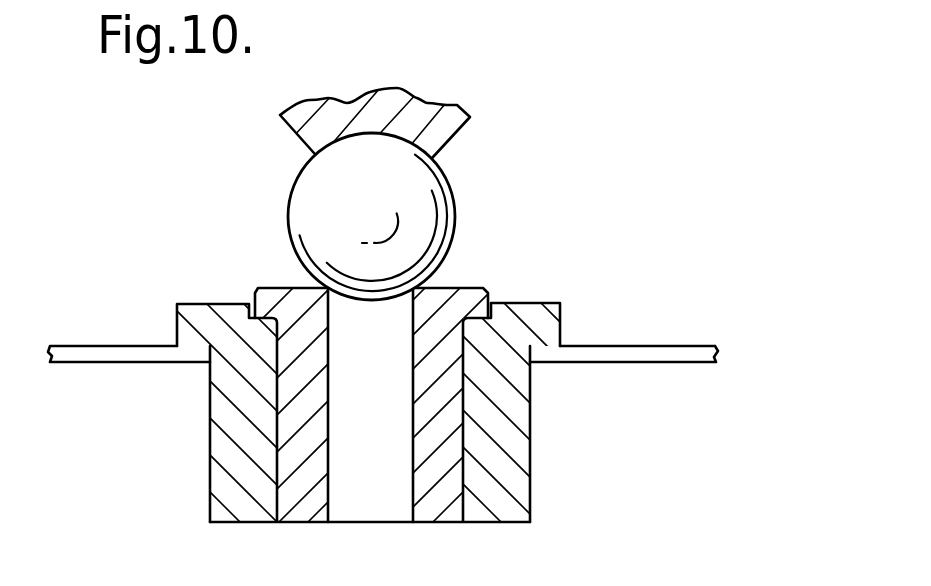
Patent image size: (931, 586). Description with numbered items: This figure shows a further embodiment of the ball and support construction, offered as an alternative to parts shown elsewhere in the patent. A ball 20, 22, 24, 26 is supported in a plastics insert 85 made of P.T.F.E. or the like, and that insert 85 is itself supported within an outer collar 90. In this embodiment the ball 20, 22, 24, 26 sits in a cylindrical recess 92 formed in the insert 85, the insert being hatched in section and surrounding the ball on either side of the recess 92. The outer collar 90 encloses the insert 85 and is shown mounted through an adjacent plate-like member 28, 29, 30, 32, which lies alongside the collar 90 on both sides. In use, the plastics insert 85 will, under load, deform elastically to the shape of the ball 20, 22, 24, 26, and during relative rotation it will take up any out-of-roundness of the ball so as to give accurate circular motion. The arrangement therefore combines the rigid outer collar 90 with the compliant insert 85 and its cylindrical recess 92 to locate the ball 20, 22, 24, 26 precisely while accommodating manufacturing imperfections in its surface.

The ball 20 is at (501, 216).
The ball 22 is at (501, 216).
The ball 24 is at (501, 216).
The ball 26 is at (415, 212).
The panel 28 is at (424, 320).
The panel 29 is at (424, 320).
The panel 30 is at (424, 320).
The panel 32 is at (622, 345).
The plastics insert 85 is at (302, 306).
The outer collar 90 is at (237, 427).
The cylindrical recess 92 is at (393, 441).